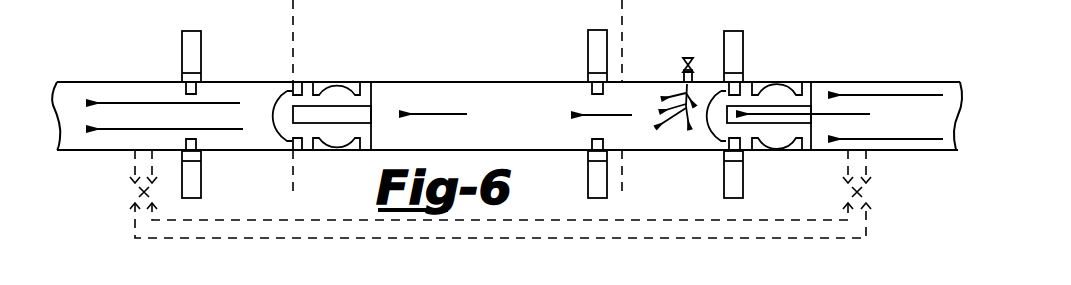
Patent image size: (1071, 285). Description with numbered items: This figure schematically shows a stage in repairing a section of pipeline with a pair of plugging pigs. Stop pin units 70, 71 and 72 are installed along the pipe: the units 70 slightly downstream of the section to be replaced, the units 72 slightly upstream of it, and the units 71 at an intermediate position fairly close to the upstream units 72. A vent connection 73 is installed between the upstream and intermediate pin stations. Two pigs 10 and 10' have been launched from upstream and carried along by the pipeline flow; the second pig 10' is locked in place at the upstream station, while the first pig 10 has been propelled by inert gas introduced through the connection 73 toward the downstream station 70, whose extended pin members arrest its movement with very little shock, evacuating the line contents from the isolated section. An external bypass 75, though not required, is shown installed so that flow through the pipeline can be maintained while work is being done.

The first pig 10 is at (330, 98).
The second pig 10' is at (788, 99).
The downstream stop pin units 70 is at (195, 51).
The intermediate stop pin units 71 is at (588, 48).
The upstream stop pin units 72 is at (736, 50).
The vent connection 73 is at (687, 56).
The external bypass 75 is at (392, 229).